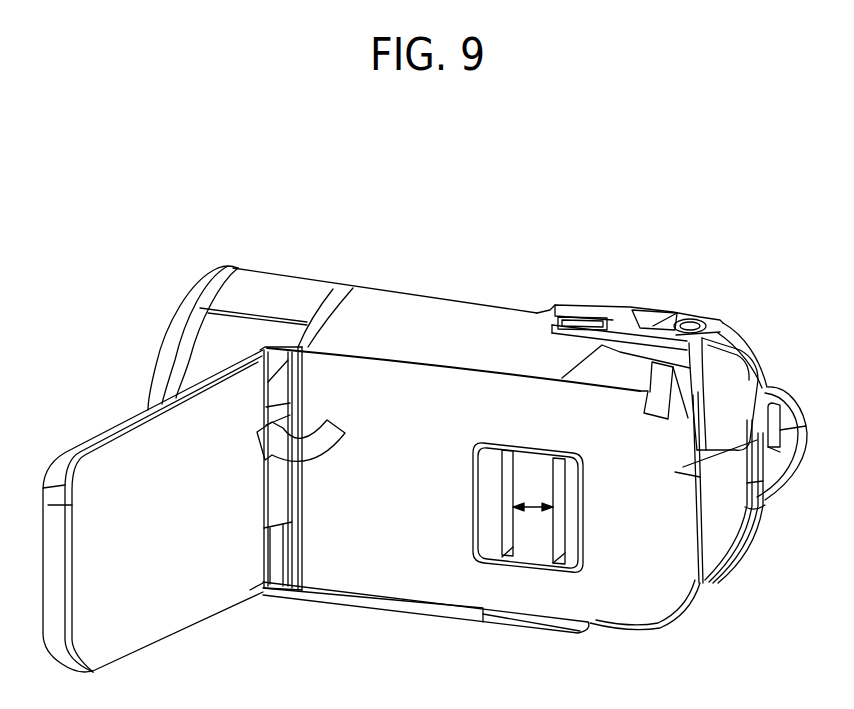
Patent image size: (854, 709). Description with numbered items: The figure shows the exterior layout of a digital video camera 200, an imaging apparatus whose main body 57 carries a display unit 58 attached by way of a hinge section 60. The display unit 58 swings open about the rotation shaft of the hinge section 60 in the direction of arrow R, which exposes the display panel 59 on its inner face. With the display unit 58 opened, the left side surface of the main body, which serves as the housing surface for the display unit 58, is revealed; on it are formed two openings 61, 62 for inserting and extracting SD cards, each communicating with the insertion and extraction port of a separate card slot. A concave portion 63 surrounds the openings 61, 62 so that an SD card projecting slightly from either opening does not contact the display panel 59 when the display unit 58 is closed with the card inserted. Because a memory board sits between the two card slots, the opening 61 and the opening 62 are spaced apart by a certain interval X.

The digital video camera 200 is at (379, 250).
The camera body 57 is at (447, 308).
The display unit 58 is at (133, 413).
The display panel 59 is at (173, 630).
The hinge section 60 is at (287, 493).
The opening 61 is at (503, 480).
The opening 62 is at (560, 497).
The concave portion 63 is at (535, 467).